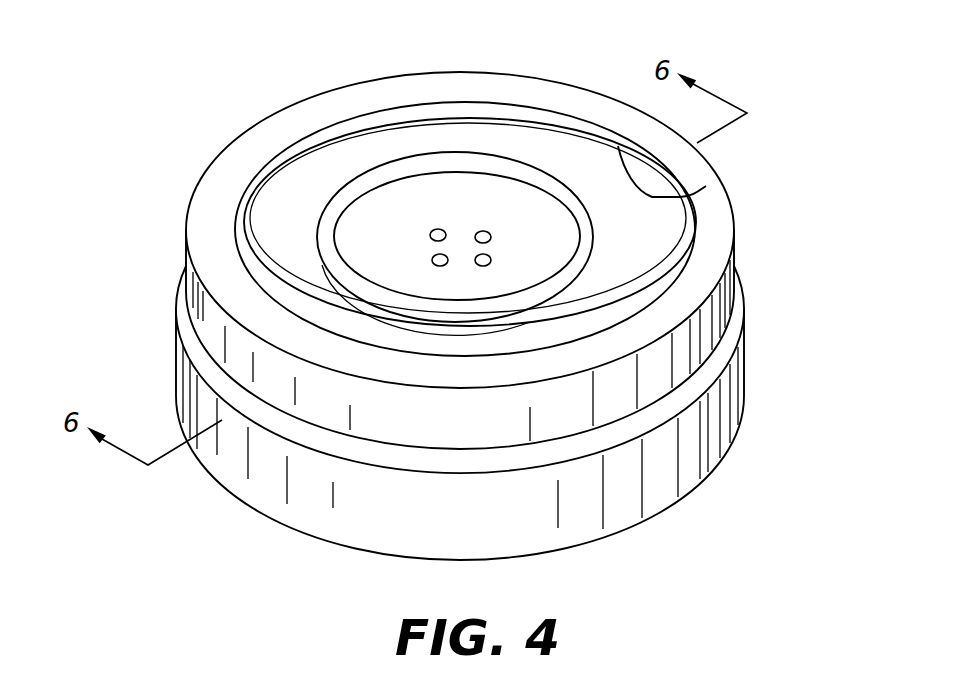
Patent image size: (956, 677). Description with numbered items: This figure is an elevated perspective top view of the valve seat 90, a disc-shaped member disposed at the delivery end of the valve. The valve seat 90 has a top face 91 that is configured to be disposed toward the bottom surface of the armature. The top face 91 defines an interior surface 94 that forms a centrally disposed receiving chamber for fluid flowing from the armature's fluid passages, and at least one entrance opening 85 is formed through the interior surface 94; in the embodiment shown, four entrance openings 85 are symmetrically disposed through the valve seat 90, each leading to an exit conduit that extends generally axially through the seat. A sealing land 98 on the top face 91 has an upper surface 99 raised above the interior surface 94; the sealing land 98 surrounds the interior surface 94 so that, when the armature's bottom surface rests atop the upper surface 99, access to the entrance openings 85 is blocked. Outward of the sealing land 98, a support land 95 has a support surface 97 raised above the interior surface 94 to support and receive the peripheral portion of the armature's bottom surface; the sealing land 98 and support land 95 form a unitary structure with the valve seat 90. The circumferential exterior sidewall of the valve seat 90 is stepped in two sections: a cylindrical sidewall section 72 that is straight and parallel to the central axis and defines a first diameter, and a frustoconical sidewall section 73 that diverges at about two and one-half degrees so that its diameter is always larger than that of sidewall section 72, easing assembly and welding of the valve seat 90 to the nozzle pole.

The valve seat 90 is at (217, 120).
The sidewall section 72 is at (698, 325).
The sidewall section 73 is at (703, 450).
The support surface 97 is at (371, 97).
The top face 91 is at (497, 123).
The support land 95 is at (706, 186).
The interior surface 94 is at (533, 250).
The upper surface 99 is at (318, 247).
The sealing land 98 is at (375, 298).
The entrance opening 85 is at (478, 230).